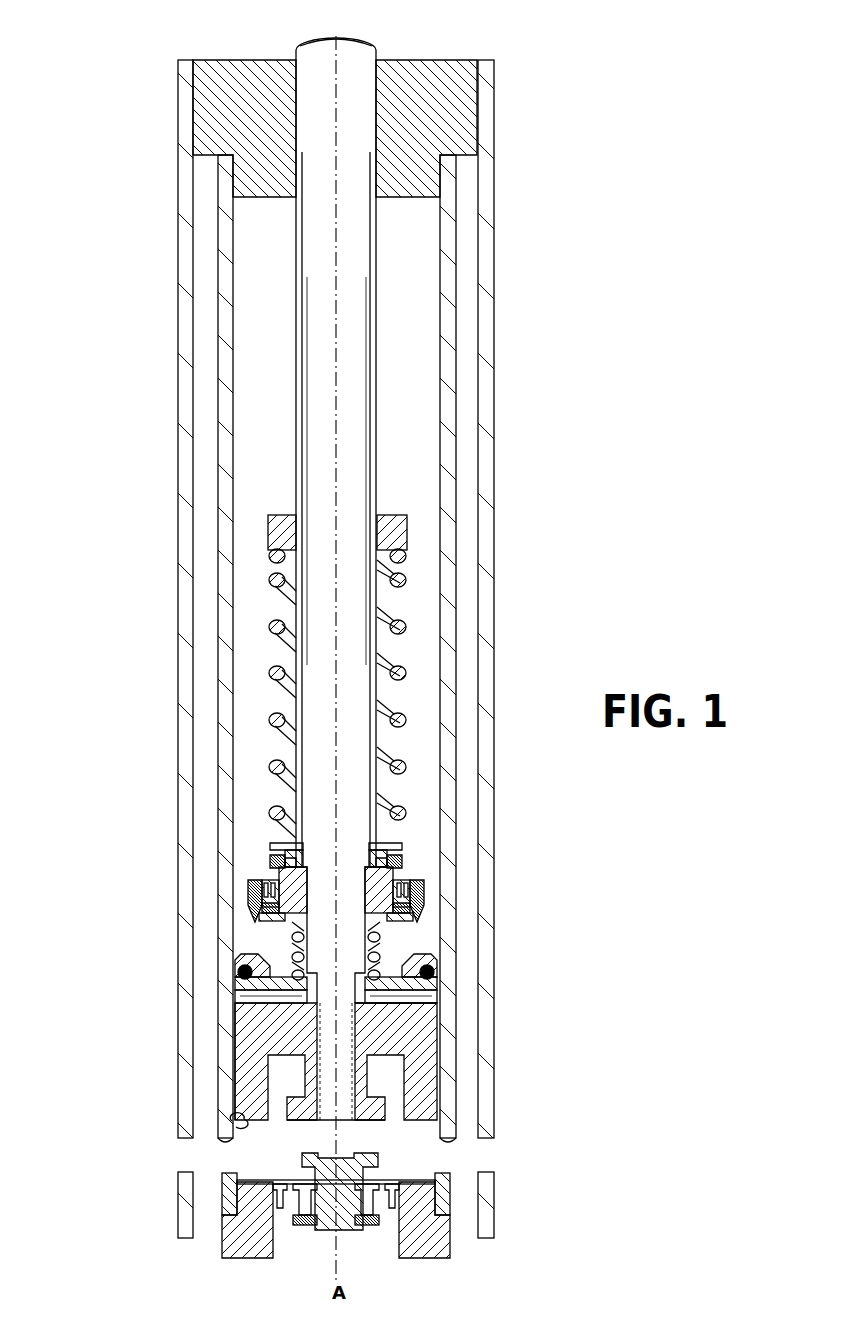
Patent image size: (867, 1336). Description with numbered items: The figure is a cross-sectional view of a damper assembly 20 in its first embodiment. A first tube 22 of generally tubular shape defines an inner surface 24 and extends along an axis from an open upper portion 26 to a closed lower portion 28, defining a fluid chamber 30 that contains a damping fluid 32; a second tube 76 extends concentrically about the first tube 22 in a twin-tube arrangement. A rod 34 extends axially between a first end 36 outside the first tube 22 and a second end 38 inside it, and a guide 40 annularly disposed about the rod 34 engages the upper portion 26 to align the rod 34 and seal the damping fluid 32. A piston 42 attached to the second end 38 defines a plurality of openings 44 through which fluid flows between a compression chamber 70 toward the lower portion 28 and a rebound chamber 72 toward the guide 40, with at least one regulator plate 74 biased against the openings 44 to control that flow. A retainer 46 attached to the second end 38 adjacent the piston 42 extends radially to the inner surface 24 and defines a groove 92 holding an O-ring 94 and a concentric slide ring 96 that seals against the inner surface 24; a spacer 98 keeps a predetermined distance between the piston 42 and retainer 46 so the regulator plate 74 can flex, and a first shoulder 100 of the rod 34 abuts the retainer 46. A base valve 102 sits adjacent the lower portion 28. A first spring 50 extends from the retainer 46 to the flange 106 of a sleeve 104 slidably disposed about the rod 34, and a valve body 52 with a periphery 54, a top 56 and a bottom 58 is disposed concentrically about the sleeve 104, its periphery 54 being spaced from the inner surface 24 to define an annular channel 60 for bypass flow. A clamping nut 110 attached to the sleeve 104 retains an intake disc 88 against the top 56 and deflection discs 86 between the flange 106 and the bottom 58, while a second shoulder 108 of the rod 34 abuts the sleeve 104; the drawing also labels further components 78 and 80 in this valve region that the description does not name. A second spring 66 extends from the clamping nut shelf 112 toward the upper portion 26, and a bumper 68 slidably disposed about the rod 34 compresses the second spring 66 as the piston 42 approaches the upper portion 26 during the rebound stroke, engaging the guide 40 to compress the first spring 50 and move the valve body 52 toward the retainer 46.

The damper assembly 20 is at (546, 201).
The first tube 22 is at (222, 669).
The inner surface 24 is at (222, 475).
The upper portion 26 is at (445, 242).
The lower portion 28 is at (481, 1115).
The fluid chamber 30 is at (446, 292).
The damping fluid 32 is at (407, 455).
The rod 34 is at (355, 387).
The first end 36 is at (378, 50).
The second end 38 is at (282, 1103).
The guide 40 is at (443, 90).
The piston 42 is at (423, 1052).
The openings 44 is at (237, 1025).
The retainer 46 is at (425, 963).
The first spring 50 is at (238, 954).
The valve body 52 is at (428, 895).
The periphery 54 is at (248, 886).
The top 56 is at (398, 861).
The bottom 58 is at (293, 936).
The annular channel 60 is at (412, 875).
The second spring 66 is at (408, 672).
The bumper 68 is at (396, 532).
The compression chamber 70 is at (232, 1121).
The rebound chamber 72 is at (228, 298).
The regulator plate 74 is at (235, 1018).
The second tube 76 is at (181, 607).
The valve plate 78 is at (433, 985).
The valve stop 80 is at (401, 909).
The deflection discs 86 is at (413, 933).
The intake disc 88 is at (253, 877).
The groove 92 is at (243, 973).
The O-ring 94 is at (440, 980).
The slide ring 96 is at (240, 990).
The spacer 98 is at (380, 1008).
The first shoulder 100 is at (312, 981).
The base valve 102 is at (256, 1225).
The sleeve 104 is at (272, 862).
The flange 106 is at (381, 921).
The second shoulder 108 is at (368, 873).
The clamping nut 110 is at (401, 838).
The clamping nut shelf 112 is at (274, 855).